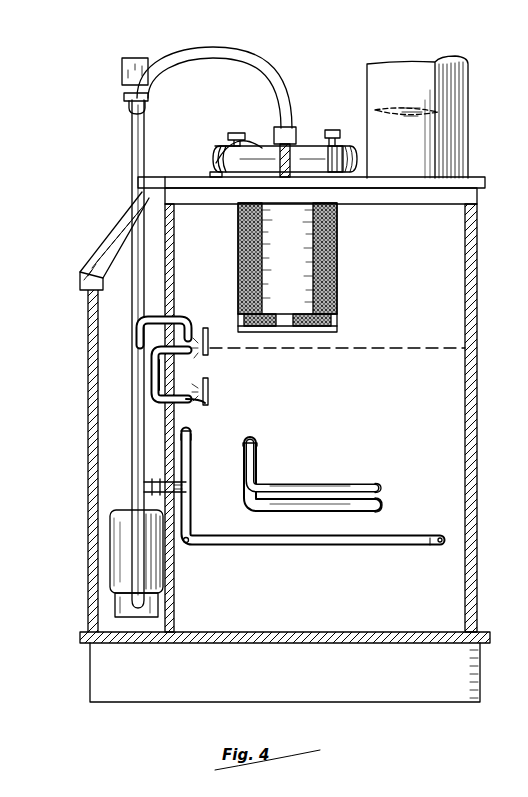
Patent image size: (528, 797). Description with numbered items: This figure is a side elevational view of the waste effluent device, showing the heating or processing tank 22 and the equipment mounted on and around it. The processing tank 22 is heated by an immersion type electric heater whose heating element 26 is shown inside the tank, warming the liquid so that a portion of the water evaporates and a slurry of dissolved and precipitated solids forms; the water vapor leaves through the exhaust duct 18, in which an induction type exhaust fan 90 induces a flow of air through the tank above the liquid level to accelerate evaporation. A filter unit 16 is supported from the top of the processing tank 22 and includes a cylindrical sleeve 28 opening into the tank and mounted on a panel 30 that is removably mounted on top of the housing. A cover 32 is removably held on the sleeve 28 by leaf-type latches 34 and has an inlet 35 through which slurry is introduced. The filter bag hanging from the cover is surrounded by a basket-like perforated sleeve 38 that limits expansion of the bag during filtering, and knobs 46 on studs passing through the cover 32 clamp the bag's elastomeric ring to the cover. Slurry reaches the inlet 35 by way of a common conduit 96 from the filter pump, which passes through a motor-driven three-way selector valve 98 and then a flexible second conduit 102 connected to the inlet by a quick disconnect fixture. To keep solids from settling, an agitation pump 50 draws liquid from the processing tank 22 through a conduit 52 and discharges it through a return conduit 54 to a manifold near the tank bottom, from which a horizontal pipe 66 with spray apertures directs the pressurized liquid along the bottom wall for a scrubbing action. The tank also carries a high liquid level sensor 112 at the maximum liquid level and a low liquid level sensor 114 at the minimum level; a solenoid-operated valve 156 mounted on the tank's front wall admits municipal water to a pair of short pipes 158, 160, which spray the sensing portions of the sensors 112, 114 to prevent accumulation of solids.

The filter unit 16 is at (340, 103).
The exhaust duct 18 is at (445, 148).
The processing tank 22 is at (362, 431).
The heating element 26 is at (385, 492).
The cylindrical sleeve 28 is at (352, 158).
The panel 30 is at (355, 188).
The cover 32 is at (211, 170).
The leaf-type latch 34 is at (212, 155).
The inlet 35 is at (291, 125).
The perforated sleeve 38 is at (300, 270).
The knob 46 is at (236, 131).
The agitation pump 50 is at (124, 548).
The conduit 52 is at (143, 487).
The return conduit 54 is at (136, 327).
The pipe 66 is at (430, 545).
The exhaust fan 90 is at (440, 111).
The common conduit 96 is at (131, 153).
The 3-way selector valve 98 is at (120, 66).
The second conduit 102 is at (224, 50).
The high liquid level sensor 112 is at (202, 326).
The low liquid level sensor 114 is at (210, 390).
The solenoid-operated valve 156 is at (157, 372).
The short pipe 158 is at (155, 348).
The short pipe 160 is at (196, 403).